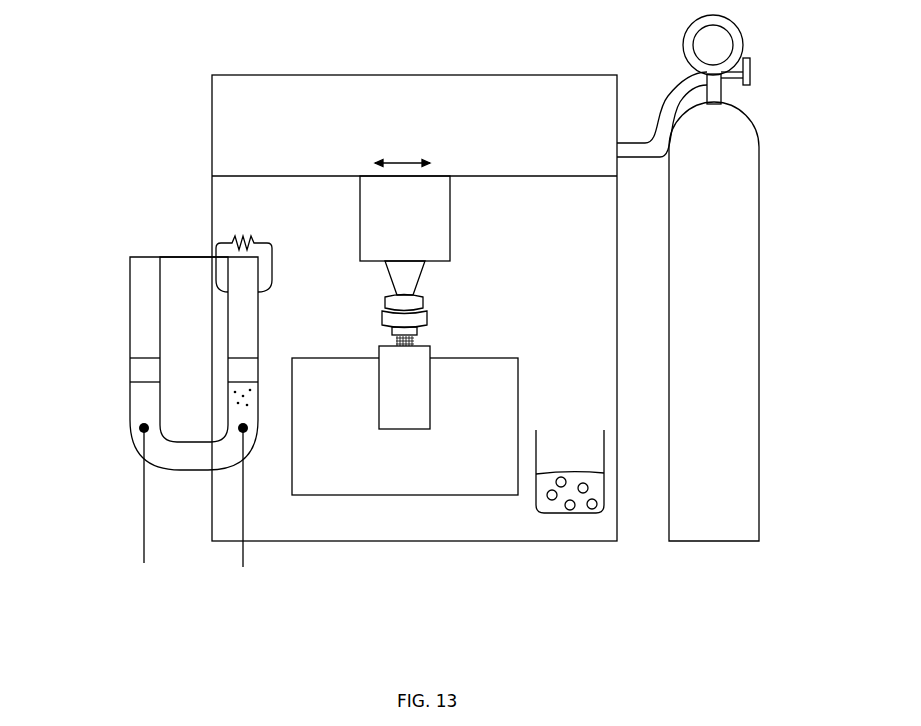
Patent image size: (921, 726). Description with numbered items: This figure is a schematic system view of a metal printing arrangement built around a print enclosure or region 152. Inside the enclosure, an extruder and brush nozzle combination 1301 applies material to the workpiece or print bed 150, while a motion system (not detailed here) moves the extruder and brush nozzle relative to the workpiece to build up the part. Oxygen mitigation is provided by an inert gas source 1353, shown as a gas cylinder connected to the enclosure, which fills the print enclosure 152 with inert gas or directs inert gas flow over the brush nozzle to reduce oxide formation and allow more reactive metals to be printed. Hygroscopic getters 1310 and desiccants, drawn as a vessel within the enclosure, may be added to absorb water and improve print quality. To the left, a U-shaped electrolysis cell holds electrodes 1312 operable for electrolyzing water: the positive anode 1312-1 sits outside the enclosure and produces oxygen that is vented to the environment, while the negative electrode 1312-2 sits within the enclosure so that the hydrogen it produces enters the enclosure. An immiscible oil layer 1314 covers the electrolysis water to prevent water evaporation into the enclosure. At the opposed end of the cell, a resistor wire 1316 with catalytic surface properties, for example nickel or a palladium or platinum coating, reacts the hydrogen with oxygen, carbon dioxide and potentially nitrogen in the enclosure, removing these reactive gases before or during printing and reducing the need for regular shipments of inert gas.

The print enclosure 152 is at (524, 253).
The extruder and brush nozzle combination 1301 is at (395, 340).
The print bed 150 is at (388, 495).
The hygroscopic getters 1310 is at (536, 497).
The inert gas source 1353 is at (759, 143).
The electrodes 1312 is at (140, 430).
The immiscible oil layer 1314 is at (135, 370).
The resistor wire 1316 is at (213, 258).
The positive anode 1312-1 is at (144, 533).
The negative electrode 1312-2 is at (243, 557).